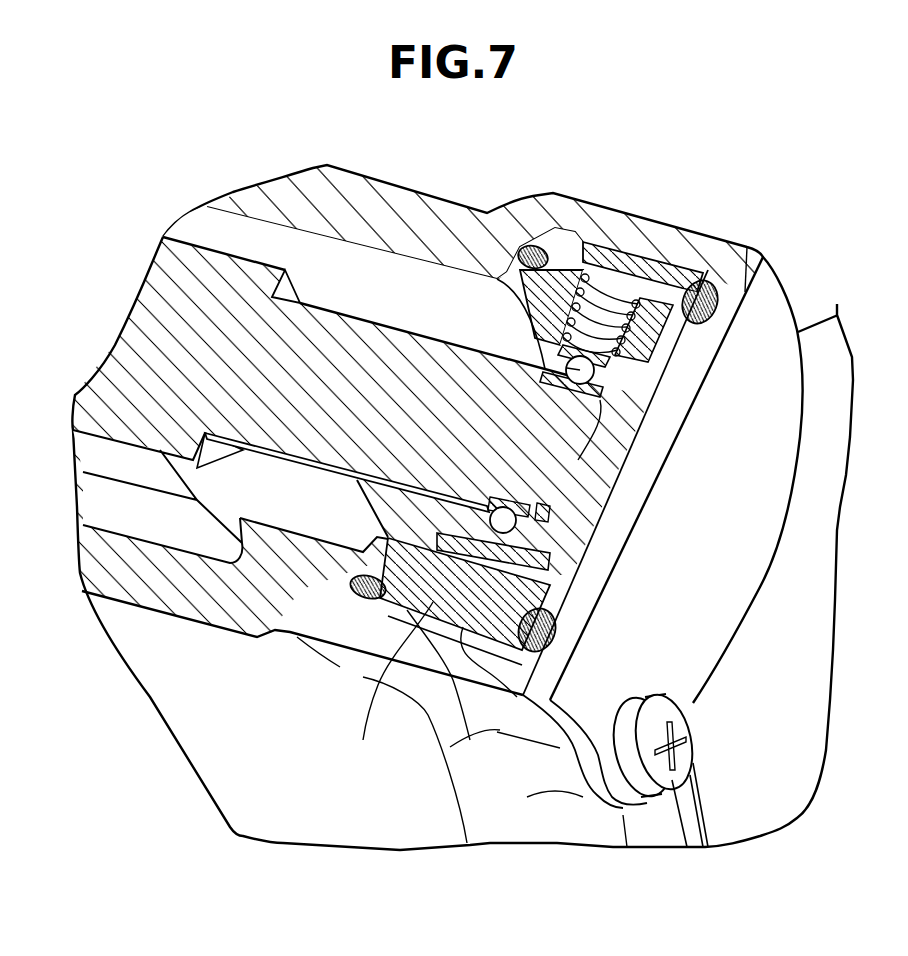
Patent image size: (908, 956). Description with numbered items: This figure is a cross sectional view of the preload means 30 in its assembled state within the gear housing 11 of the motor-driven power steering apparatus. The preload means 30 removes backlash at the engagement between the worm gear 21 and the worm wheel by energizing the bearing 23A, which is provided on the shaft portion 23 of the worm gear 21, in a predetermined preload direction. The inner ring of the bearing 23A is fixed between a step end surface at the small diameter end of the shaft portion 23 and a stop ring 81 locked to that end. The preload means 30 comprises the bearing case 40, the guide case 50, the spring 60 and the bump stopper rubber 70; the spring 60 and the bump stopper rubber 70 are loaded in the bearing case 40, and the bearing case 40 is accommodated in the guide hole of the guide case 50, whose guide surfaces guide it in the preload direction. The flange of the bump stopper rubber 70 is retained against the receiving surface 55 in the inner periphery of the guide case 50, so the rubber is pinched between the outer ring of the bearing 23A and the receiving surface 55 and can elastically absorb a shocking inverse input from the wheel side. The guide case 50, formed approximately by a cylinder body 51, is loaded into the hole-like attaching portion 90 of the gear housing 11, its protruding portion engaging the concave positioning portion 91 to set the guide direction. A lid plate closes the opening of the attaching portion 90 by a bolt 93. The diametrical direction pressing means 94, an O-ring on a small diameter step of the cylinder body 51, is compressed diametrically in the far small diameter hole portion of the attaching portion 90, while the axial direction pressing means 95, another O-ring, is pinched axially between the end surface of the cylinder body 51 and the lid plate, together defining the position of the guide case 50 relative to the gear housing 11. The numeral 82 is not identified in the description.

The gear housing 11 is at (381, 180).
The worm gear 21 is at (207, 244).
The shaft portion 23 is at (397, 330).
The bearing 23A is at (548, 362).
The preload means 30 is at (633, 250).
The bearing case 40 is at (660, 345).
The guide case 50 is at (578, 243).
The cylinder body 51 is at (377, 663).
The receiving surface 55 is at (650, 265).
The spring 60 is at (600, 280).
The bump stopper rubber 70 is at (665, 315).
The stop ring 81 is at (600, 400).
The rod 82 is at (627, 512).
The attaching portion 90 is at (450, 693).
The concave positioning portion 91 is at (693, 285).
The bolt 93 is at (685, 727).
The diametrical direction pressing means 94 is at (337, 588).
The axial direction pressing means 95 is at (567, 633).